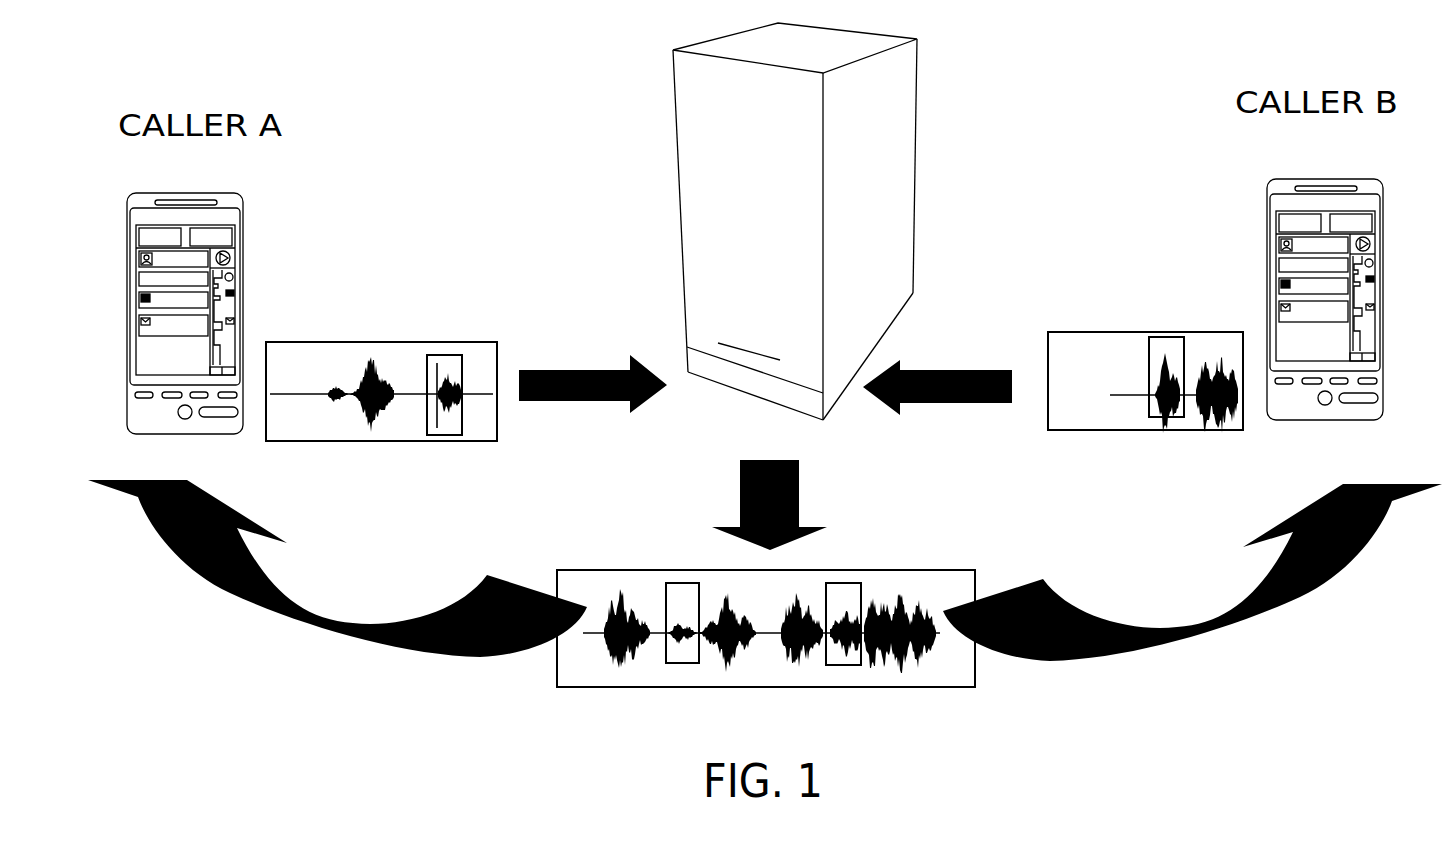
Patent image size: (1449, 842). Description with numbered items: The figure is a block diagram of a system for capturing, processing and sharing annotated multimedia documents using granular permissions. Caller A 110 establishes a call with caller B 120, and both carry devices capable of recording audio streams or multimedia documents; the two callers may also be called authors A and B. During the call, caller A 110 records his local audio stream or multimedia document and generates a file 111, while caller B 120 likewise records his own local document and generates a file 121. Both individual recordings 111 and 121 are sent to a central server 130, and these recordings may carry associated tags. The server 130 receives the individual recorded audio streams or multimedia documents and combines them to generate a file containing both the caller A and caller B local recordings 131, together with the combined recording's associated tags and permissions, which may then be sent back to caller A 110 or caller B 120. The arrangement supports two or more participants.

The caller A 110 is at (223, 191).
The file 111 is at (400, 342).
The caller B 120 is at (1318, 178).
The file 121 is at (1088, 360).
The central server 130 is at (915, 152).
The combined local recordings 131 is at (676, 675).